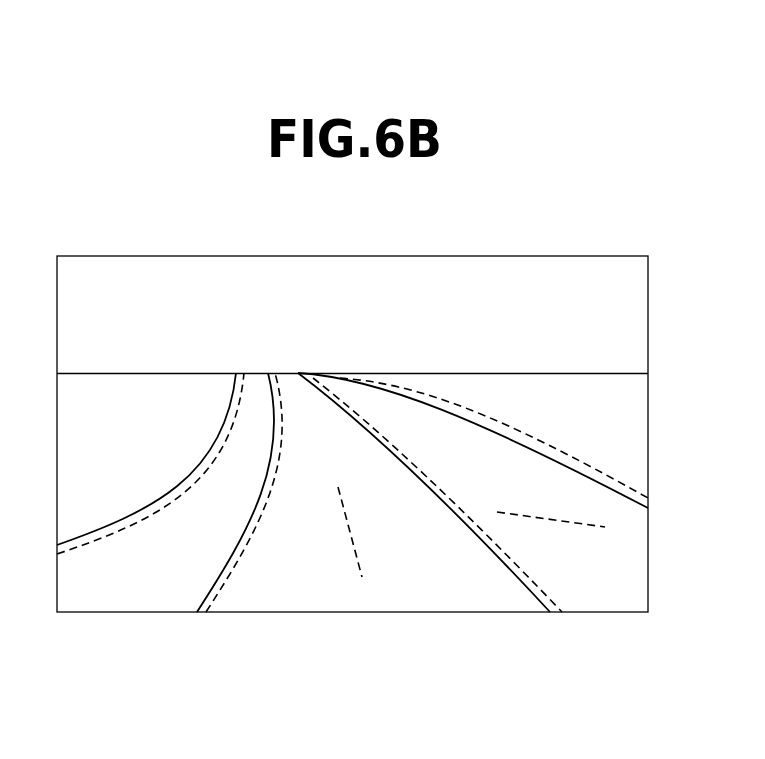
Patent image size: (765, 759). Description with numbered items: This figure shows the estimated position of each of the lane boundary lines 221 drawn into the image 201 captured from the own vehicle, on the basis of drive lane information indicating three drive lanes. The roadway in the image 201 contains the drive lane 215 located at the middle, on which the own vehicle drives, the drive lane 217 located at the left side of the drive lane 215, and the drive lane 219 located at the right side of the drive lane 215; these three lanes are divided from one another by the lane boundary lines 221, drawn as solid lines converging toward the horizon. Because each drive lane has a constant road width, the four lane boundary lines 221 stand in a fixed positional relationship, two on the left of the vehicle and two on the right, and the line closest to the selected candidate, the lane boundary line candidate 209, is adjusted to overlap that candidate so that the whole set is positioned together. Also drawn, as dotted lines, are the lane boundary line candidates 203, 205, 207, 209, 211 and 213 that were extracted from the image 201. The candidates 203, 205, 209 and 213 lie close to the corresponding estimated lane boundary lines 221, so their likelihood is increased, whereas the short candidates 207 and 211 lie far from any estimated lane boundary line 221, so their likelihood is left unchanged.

The image 201 is at (500, 256).
The lane boundary line candidate 203 is at (142, 519).
The lane boundary line candidate 205 is at (248, 543).
The lane boundary line candidate 207 is at (353, 531).
The lane boundary line candidate 209 is at (418, 458).
The lane boundary line candidate 211 is at (563, 526).
The lane boundary line candidate 213 is at (568, 452).
The drive lane 215 is at (288, 395).
The drive lane 217 is at (253, 393).
The drive lane 219 is at (368, 398).
The lane boundary line 221 is at (203, 462).